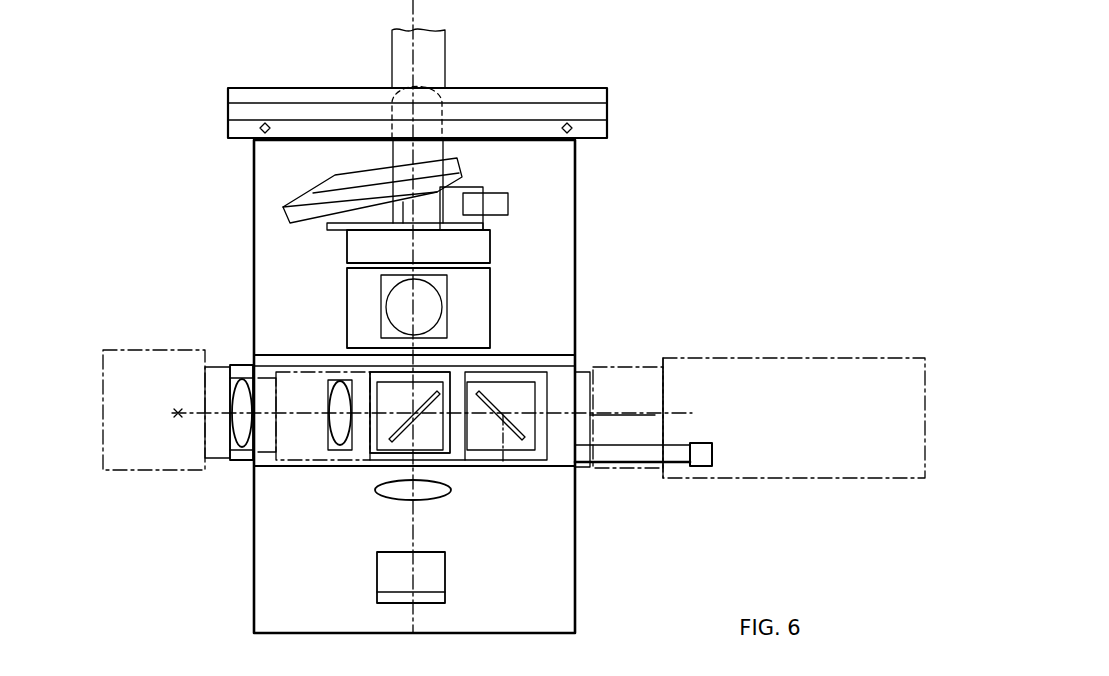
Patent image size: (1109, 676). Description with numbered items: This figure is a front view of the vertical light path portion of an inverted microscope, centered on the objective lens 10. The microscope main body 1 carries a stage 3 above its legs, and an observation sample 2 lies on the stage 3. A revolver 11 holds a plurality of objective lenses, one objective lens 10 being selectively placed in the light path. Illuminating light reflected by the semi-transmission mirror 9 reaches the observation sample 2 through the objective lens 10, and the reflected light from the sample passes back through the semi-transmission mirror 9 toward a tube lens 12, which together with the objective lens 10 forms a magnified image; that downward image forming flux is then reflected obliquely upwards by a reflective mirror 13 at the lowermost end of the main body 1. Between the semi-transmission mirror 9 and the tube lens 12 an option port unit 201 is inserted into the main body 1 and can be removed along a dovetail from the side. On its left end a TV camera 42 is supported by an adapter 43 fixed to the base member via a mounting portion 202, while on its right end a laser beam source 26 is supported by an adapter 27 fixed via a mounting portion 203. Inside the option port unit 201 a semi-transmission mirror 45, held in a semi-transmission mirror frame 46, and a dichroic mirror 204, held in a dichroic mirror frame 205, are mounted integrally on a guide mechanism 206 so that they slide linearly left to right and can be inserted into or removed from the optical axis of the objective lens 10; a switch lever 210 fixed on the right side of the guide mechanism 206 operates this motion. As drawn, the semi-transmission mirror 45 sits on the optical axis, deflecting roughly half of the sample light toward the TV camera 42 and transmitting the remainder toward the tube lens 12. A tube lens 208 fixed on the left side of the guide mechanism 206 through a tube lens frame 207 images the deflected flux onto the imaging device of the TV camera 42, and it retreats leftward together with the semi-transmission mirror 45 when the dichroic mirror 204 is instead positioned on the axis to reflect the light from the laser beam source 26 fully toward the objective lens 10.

The microscope main body 1 is at (575, 595).
The observation sample 2 is at (447, 50).
The stage 3 is at (607, 93).
The semi-transmission mirror 9 is at (447, 288).
The objective lens 10 is at (443, 146).
The revolver 11 is at (307, 204).
The tube lens 12 is at (437, 494).
The reflective mirror 13 is at (447, 575).
The laser beam source 26 is at (812, 358).
The adapter 27 is at (652, 358).
The TV camera 42 is at (138, 350).
The adapter 43 is at (212, 365).
The semi-transmission mirror 45 is at (450, 407).
The semi-transmission mirror frame 46 is at (445, 437).
The option port unit 201 is at (283, 470).
The mounting portion 202 is at (246, 365).
The mounting portion 203 is at (592, 368).
The dichroic mirror 204 is at (530, 395).
The dichroic mirror frame 205 is at (580, 372).
The guide mechanism 206 is at (520, 455).
The tube lens frame 207 is at (353, 452).
The tube lens 208 is at (333, 450).
The switch lever 210 is at (703, 467).